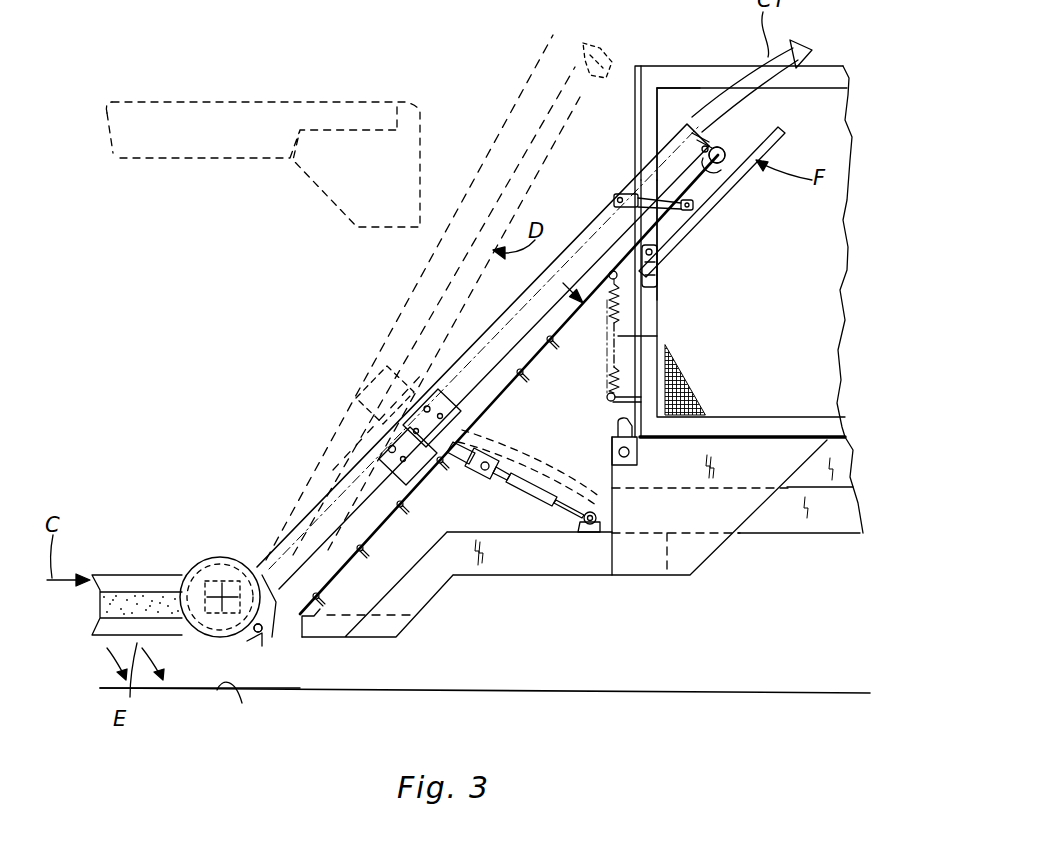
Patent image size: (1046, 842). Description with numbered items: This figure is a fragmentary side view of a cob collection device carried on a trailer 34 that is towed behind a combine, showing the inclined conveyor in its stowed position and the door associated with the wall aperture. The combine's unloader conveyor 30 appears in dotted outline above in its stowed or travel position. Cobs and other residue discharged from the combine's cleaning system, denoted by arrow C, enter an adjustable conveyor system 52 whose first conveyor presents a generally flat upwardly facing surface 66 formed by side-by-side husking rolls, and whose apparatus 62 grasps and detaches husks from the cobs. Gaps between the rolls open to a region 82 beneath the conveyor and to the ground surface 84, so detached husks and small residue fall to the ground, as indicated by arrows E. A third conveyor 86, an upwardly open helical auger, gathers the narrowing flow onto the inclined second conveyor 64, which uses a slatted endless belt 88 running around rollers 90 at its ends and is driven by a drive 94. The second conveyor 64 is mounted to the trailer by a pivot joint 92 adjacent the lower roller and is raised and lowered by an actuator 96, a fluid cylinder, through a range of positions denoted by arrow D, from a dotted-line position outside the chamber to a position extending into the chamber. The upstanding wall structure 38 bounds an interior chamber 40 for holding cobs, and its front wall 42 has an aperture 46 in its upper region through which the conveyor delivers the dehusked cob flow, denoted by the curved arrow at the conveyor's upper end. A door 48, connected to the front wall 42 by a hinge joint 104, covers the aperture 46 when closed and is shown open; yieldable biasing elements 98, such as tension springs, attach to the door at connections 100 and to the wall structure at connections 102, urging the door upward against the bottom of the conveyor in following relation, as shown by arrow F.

The unloader conveyor 30 is at (221, 160).
The trailer 34 is at (584, 577).
The upstanding wall structure 38 is at (823, 66).
The interior chamber 40 is at (683, 97).
The front wall 42 is at (635, 77).
The aperture 46 is at (635, 119).
The door 48 is at (771, 142).
The adjustable conveyor system 52 is at (577, 236).
The apparatus 62 is at (157, 595).
The second conveyor 64 is at (483, 330).
The upwardly facing surface 66 is at (120, 590).
The region 82 is at (170, 657).
The ground surface 84 is at (235, 710).
The third conveyor 86 is at (220, 557).
The slatted endless belt 88 is at (550, 347).
The rollers 90 is at (267, 633).
The pivot joint 92 is at (262, 635).
The drive 94 is at (706, 138).
The actuator 96 is at (540, 487).
The yieldable biasing elements 98 is at (655, 336).
The connections 100 is at (650, 223).
The connections 102 is at (628, 392).
The hinge joint 104 is at (657, 265).